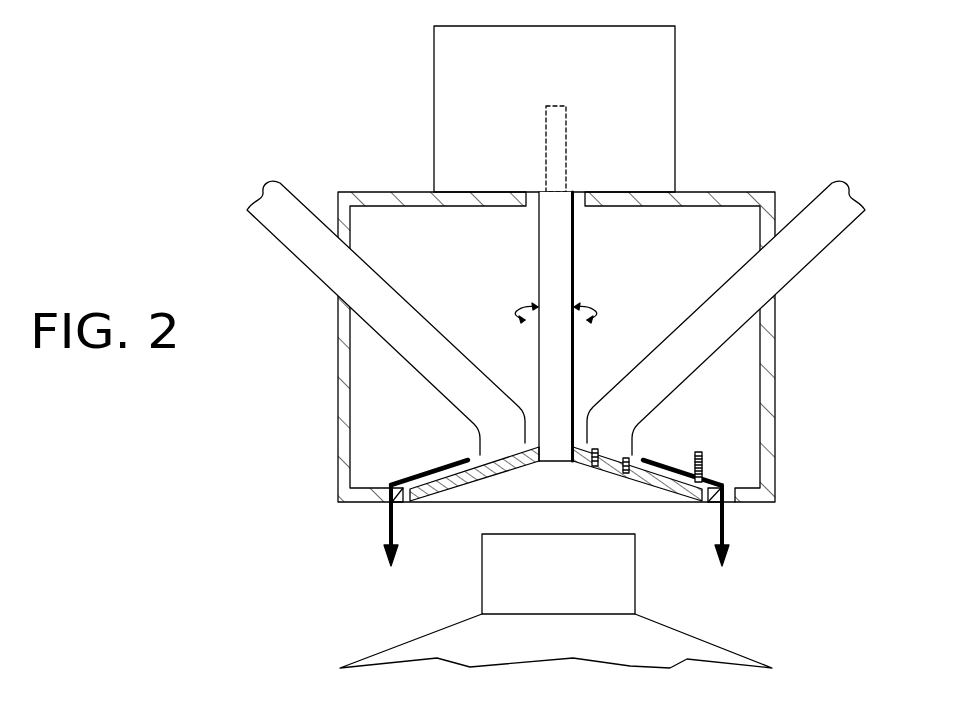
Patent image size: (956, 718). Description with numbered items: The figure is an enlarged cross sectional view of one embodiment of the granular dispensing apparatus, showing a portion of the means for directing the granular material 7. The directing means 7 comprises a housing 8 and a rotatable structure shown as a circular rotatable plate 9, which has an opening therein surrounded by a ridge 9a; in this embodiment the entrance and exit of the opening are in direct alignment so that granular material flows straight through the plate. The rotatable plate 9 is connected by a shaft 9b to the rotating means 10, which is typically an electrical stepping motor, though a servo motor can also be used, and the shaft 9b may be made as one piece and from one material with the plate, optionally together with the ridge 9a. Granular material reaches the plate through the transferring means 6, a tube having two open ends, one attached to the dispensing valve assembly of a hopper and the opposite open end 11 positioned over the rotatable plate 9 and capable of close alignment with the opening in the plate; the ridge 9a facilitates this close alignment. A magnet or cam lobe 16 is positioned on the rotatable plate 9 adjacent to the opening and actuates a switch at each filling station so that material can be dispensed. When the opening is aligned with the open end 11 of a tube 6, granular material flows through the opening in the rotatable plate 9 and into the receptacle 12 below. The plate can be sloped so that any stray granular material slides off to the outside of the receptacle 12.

The transferring means 6 is at (305, 265).
The means for directing the granular material 7 is at (562, 347).
The housing 8 is at (382, 192).
The rotatable plate 9 is at (470, 489).
The ridge 9a is at (643, 461).
The shaft 9b is at (575, 236).
The rotating means 10 is at (570, 80).
The open end 11 is at (612, 427).
The receptacle 12 is at (571, 595).
The magnet or cam lobe 16 is at (703, 463).